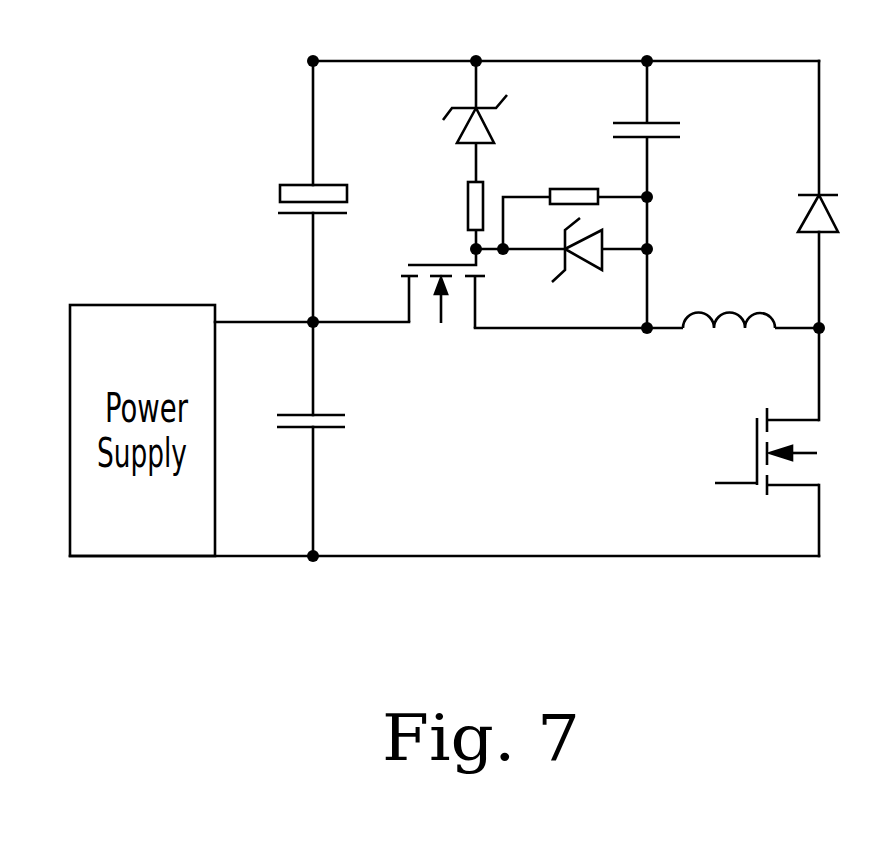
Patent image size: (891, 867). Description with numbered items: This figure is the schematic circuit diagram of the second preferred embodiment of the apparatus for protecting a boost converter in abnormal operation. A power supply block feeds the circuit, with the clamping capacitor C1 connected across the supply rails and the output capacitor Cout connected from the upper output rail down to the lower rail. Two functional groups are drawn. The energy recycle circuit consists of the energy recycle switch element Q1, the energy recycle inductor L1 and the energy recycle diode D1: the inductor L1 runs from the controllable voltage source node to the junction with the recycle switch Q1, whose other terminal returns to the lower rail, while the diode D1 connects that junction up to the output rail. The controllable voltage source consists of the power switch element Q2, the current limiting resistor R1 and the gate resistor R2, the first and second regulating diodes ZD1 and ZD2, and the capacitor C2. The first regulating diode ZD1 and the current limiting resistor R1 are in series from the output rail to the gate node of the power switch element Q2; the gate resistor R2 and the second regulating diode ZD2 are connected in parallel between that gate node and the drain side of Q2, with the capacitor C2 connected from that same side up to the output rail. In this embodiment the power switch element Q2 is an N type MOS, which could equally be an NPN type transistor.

The first regulating diode ZD1 is at (475, 93).
The second regulating diode ZD2 is at (561, 270).
The current limiting resistor R1 is at (449, 215).
The gate resistor R2 is at (575, 195).
The clamping capacitor C1 is at (322, 449).
The capacitor C2 is at (670, 194).
The output capacitor Cout is at (275, 196).
The energy recycle diode D1 is at (840, 214).
The energy recycle inductor L1 is at (733, 295).
The energy recycle switch element Q1 is at (787, 451).
The power switch element Q2 is at (443, 312).